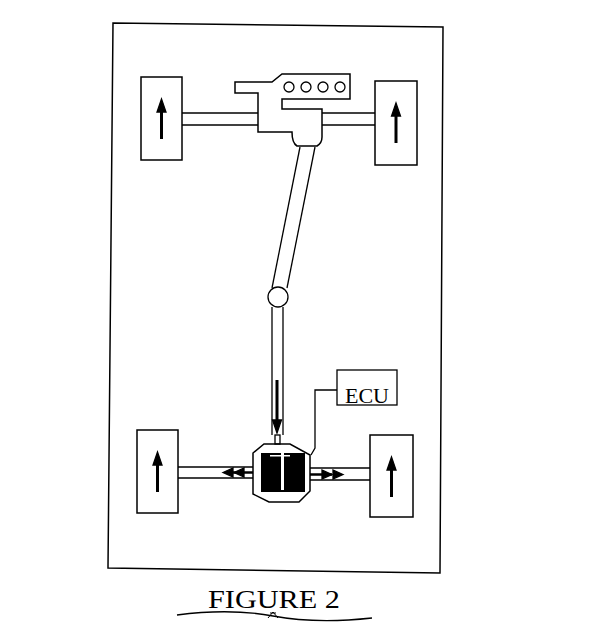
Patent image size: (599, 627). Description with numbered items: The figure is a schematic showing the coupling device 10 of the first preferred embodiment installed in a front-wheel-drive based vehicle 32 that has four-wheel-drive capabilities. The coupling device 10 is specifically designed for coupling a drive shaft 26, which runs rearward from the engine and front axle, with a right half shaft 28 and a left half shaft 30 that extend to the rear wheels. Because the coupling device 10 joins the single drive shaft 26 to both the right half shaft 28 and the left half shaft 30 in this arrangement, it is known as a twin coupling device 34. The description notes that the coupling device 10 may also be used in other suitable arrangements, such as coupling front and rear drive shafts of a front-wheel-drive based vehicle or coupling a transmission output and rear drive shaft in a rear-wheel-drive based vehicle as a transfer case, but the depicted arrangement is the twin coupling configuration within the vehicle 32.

The coupling device 10 is at (326, 446).
The drive shaft 26 is at (271, 373).
The right half shaft 28 is at (340, 482).
The left half shaft 30 is at (222, 481).
The front-wheel-drive based vehicle 32 is at (430, 283).
The twin coupling device 34 is at (212, 417).